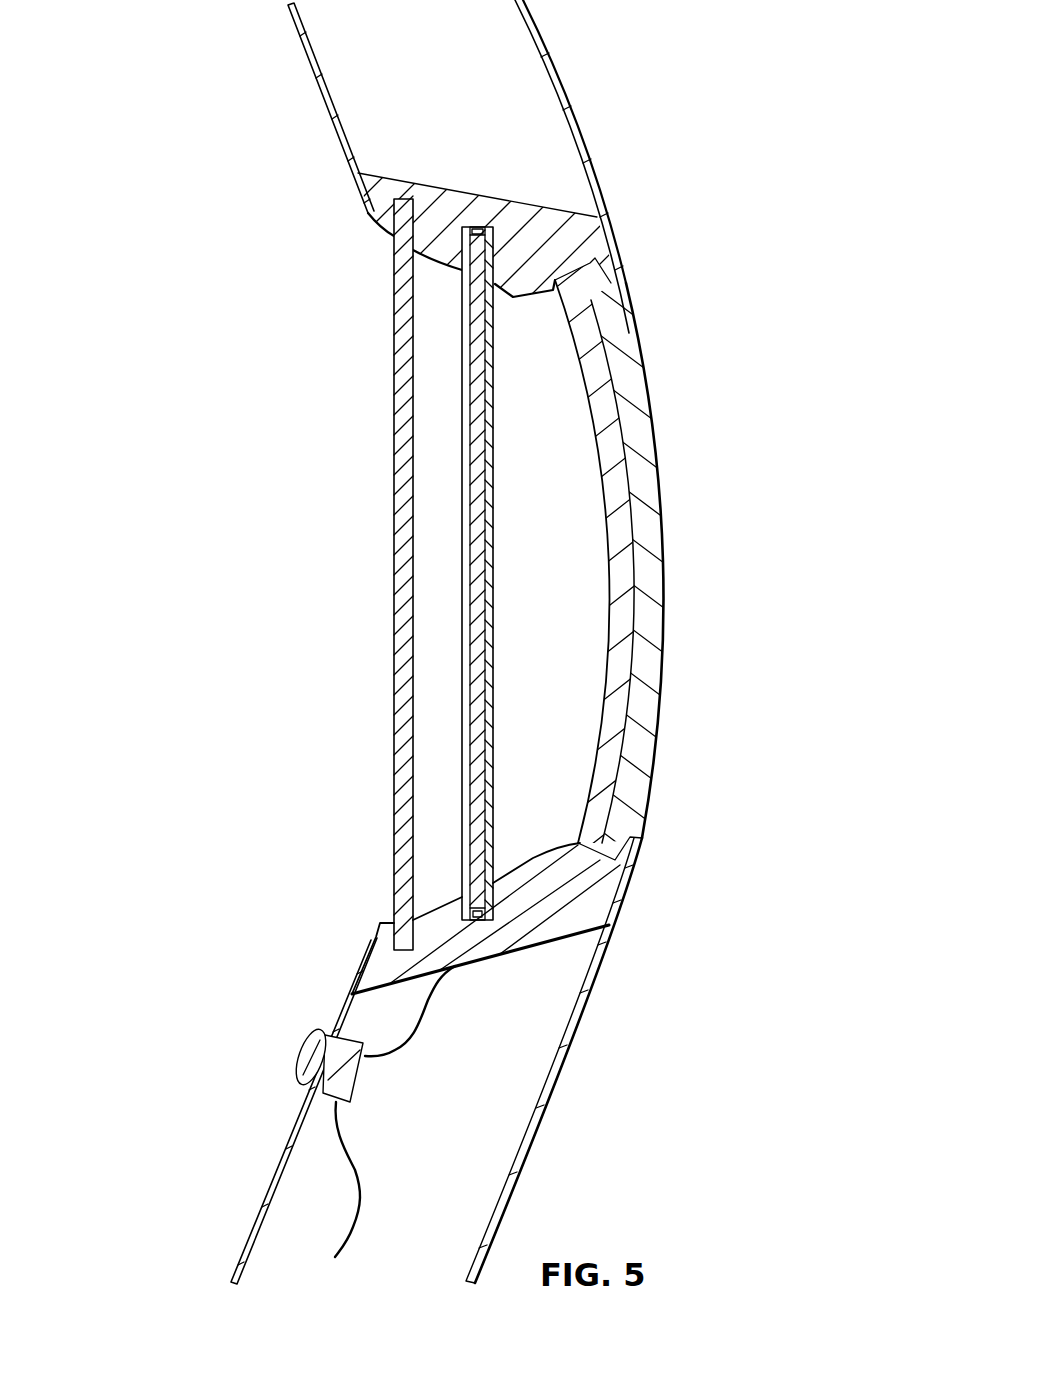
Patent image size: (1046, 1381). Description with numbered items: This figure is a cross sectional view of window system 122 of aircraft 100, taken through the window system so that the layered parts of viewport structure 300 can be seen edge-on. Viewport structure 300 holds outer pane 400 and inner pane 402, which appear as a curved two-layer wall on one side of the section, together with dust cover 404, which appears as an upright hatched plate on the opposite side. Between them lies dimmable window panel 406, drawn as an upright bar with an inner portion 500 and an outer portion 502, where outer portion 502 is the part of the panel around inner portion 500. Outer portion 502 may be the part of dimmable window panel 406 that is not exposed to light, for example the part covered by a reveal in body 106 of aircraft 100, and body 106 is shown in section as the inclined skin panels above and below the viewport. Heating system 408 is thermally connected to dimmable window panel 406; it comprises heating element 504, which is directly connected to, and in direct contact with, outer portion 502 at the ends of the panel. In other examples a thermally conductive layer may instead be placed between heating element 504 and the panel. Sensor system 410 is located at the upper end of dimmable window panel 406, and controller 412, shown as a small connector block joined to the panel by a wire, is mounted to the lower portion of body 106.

The aircraft 100 is at (580, 57).
The body 106 is at (556, 1082).
The window system 122 is at (292, 265).
The viewport structure 300 is at (431, 112).
The outer pane 400 is at (653, 405).
The inner pane 402 is at (618, 493).
The dust cover 404 is at (404, 372).
The dimmable window panel 406 is at (468, 657).
The heating system 408 is at (465, 220).
The sensor system 410 is at (482, 220).
The controller 412 is at (318, 1037).
The inner portion 500 is at (482, 408).
The outer portion 502 is at (482, 925).
The heating element 504 is at (470, 905).